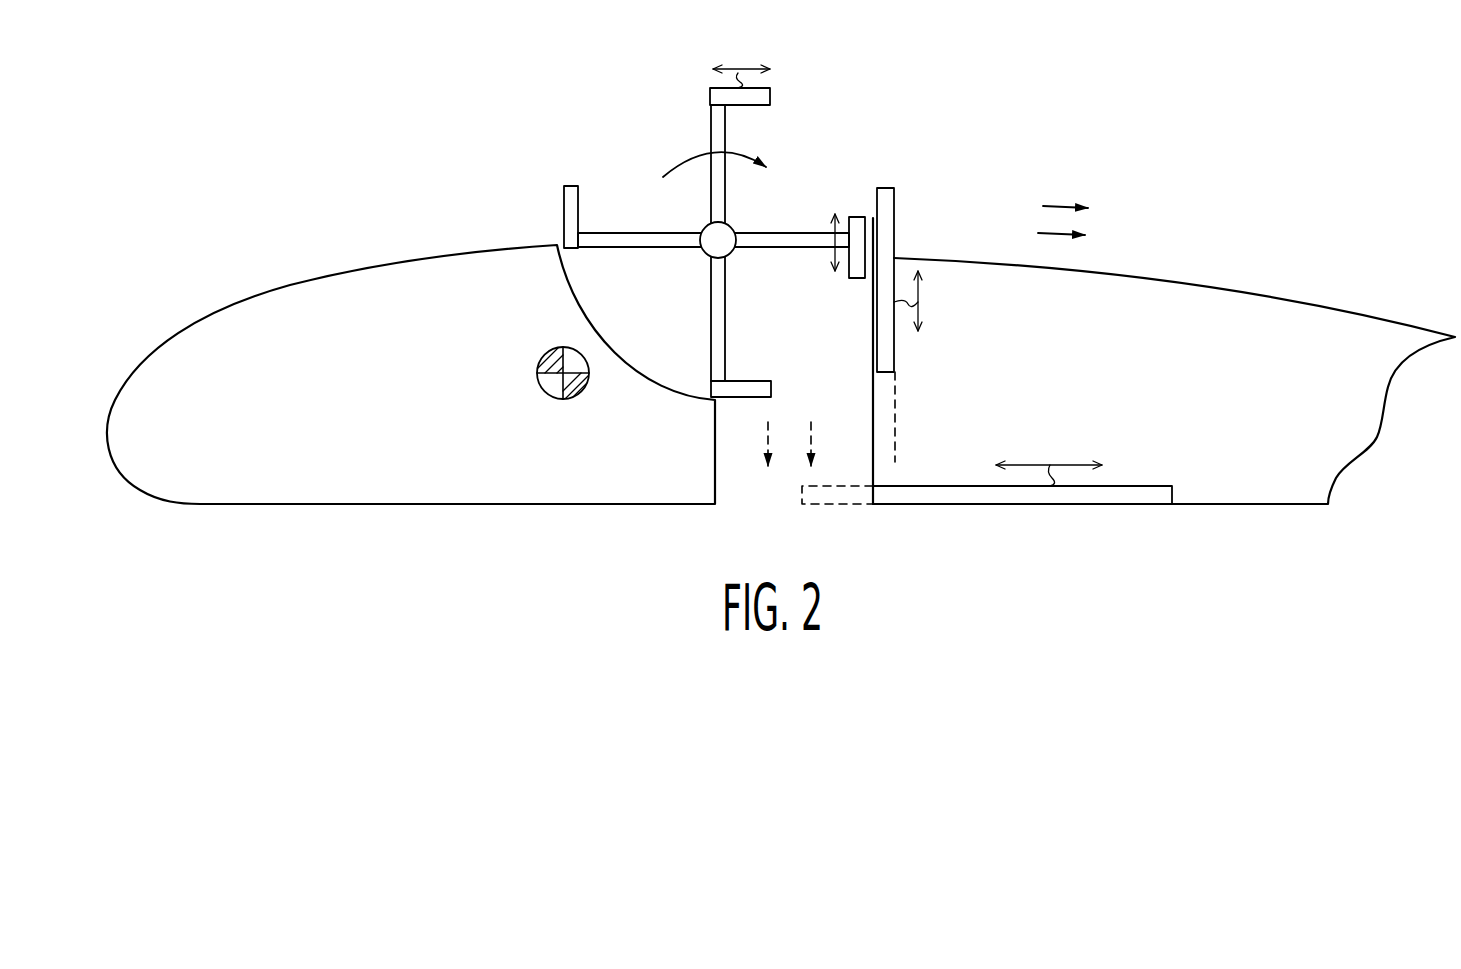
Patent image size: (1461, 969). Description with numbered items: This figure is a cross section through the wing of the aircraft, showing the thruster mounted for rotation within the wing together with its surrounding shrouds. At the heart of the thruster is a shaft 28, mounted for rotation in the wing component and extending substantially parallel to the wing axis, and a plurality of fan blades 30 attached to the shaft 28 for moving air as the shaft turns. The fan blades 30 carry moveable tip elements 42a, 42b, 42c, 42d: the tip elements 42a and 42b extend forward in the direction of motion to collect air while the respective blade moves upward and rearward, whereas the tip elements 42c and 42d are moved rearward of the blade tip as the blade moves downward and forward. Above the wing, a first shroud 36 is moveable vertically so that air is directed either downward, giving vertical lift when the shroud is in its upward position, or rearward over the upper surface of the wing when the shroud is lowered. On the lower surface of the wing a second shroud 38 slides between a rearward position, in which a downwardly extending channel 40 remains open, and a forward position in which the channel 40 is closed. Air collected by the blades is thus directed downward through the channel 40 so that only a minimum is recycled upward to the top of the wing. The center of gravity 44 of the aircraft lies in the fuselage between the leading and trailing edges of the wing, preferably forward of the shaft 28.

The shaft 28 is at (727, 224).
The fan blades 30 is at (725, 335).
The first shroud 36 is at (894, 228).
The second shroud 38 is at (950, 495).
The downwardly extending channel 40 is at (740, 452).
The moveable tip element 42a is at (565, 210).
The moveable tip element 42b is at (770, 88).
The moveable tip element 42c is at (857, 280).
The moveable tip element 42d is at (740, 392).
The center of gravity 44 is at (536, 373).